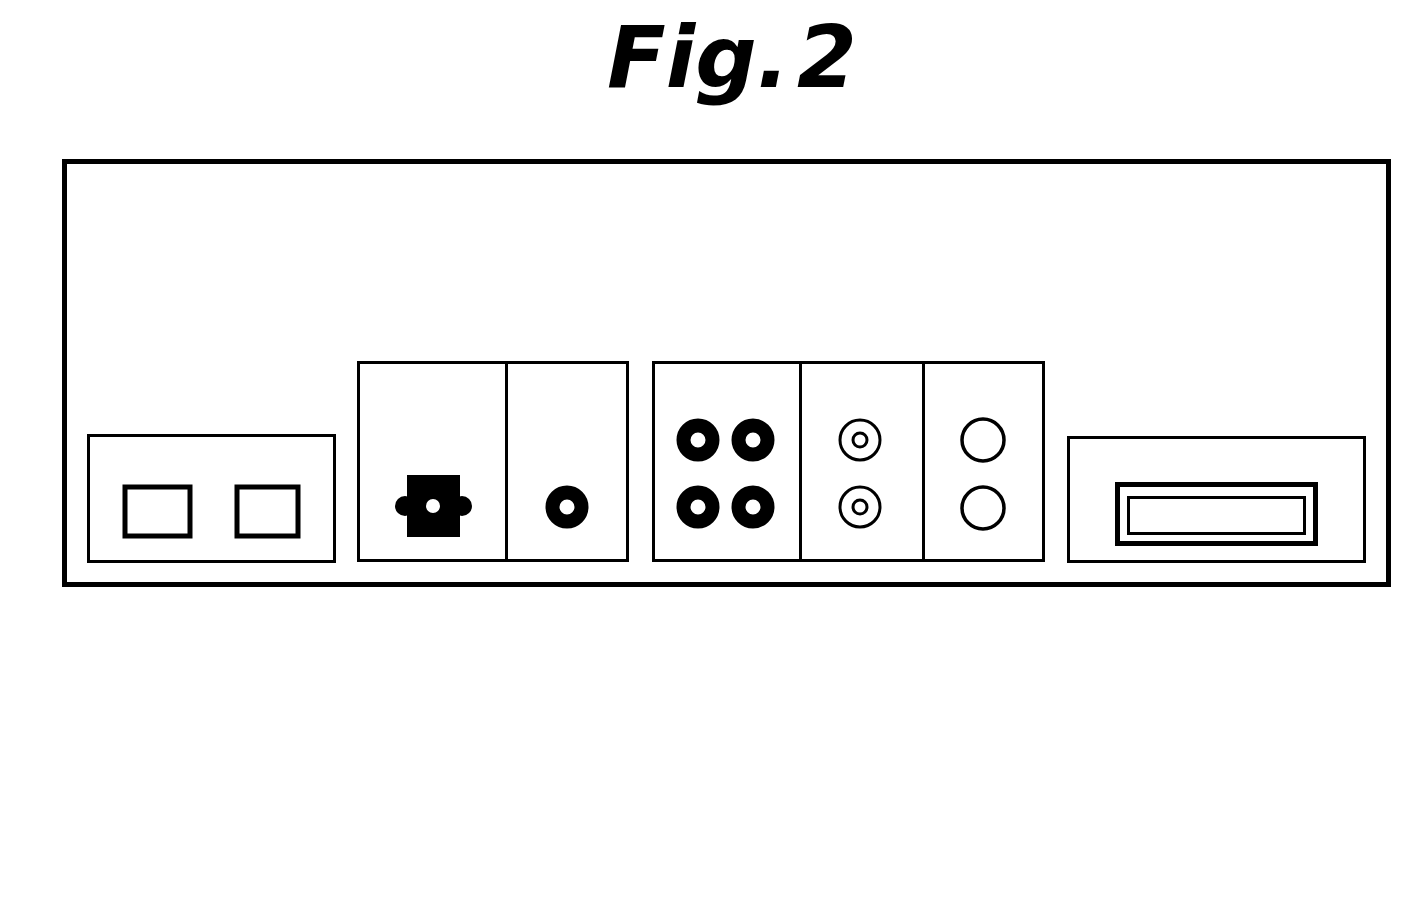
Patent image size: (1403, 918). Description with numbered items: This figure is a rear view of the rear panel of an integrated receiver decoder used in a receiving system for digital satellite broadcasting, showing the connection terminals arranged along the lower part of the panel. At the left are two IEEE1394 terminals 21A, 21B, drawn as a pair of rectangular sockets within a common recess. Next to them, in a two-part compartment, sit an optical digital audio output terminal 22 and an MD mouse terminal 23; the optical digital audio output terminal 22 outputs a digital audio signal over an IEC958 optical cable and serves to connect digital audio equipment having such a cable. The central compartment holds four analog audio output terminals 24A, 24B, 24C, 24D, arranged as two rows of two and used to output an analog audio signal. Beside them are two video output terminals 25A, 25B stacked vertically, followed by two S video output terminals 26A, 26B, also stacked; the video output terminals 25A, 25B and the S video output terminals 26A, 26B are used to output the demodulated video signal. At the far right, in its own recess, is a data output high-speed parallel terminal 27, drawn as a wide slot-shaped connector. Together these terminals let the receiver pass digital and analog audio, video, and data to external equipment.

The IEEE1394 terminal 21A is at (153, 523).
The IEEE1394 terminal 21B is at (268, 523).
The optical digital audio output terminal 22 is at (428, 537).
The MD mouse terminal 23 is at (558, 527).
The analog audio output terminal 24A is at (683, 457).
The analog audio output terminal 24B is at (702, 528).
The analog audio output terminal 24C is at (768, 457).
The analog audio output terminal 24D is at (755, 528).
The video output terminal 25A is at (880, 437).
The video output terminal 25B is at (845, 527).
The S video output terminal 26A is at (1003, 437).
The S video output terminal 26B is at (969, 528).
The data output high-speed parallel terminal 27 is at (1318, 545).